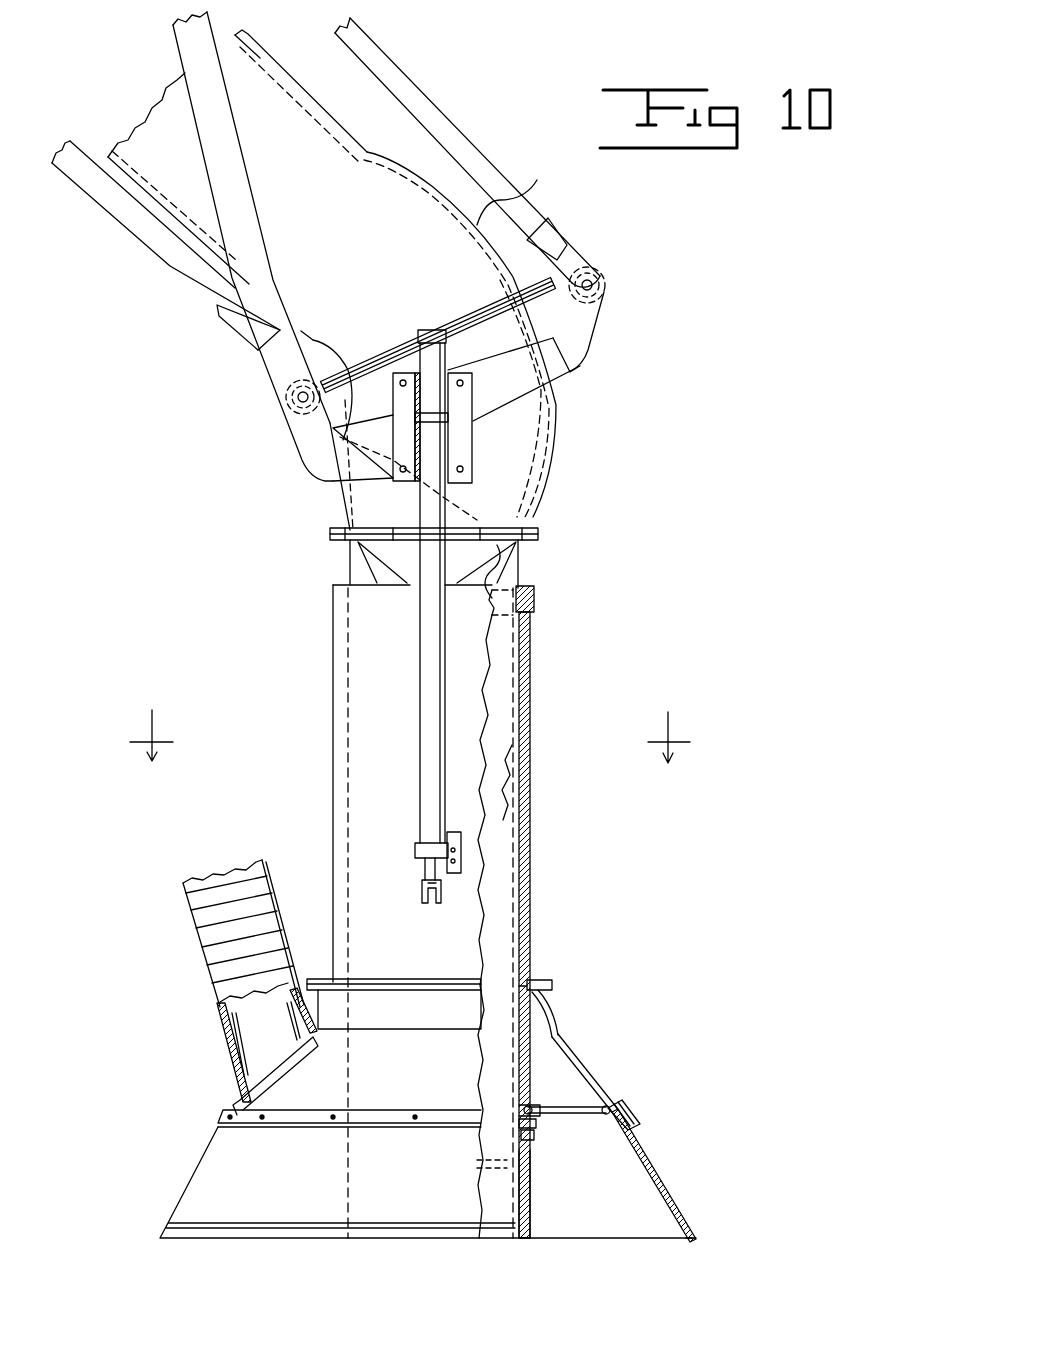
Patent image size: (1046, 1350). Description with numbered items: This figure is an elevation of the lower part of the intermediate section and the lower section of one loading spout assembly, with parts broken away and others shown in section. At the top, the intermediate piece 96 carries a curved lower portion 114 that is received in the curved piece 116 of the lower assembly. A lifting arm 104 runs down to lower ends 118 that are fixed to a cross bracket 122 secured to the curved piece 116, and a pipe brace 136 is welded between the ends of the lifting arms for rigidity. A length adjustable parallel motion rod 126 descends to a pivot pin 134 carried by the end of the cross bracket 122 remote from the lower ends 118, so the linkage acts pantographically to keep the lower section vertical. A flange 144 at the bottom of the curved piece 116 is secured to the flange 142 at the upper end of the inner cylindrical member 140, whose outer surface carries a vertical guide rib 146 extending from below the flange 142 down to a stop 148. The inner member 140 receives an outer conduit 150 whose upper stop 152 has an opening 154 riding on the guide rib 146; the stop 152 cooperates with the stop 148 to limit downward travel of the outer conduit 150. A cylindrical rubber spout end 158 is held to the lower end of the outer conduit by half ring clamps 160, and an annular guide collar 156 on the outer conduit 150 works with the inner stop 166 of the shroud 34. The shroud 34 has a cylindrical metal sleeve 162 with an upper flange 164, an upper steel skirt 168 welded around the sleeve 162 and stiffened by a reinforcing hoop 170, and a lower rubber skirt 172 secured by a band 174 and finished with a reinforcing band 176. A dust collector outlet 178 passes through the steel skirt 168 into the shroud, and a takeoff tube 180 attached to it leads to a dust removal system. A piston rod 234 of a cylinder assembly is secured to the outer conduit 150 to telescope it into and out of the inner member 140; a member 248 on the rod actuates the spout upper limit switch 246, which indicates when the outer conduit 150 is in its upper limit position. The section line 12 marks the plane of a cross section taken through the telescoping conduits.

The intermediate piece 96 is at (270, 45).
The lifting arm 104 is at (255, 220).
The pipe brace 136 is at (167, 265).
The length adjustable parallel motion rod 126 is at (462, 147).
The curved lower portion 114 is at (529, 184).
The pivot pin 134 is at (600, 290).
The cross bracket 122 is at (582, 365).
The curved piece 116 is at (557, 447).
The lower ends of arms 118 is at (260, 367).
The piston rod 234 is at (422, 866).
The switch actuating member 248 is at (443, 878).
The spout upper limit switch 246 is at (550, 812).
The flange 144 is at (480, 528).
The inner cylindrical member 140 is at (522, 572).
The flange 142 is at (475, 585).
The stop 152 is at (546, 627).
The opening 154 is at (532, 603).
The outer conduit 150 is at (530, 863).
The rubber spout end 158 is at (530, 1215).
The section line 12 is at (421, 749).
The flange 164 is at (550, 982).
The annular guide collar 156 is at (533, 978).
The cylindrical metal sleeve 162 is at (545, 1010).
The vertical guide rib 146 is at (513, 1082).
The inner stop 166 is at (518, 1100).
The stop 148 is at (523, 1163).
The upper steel skirt 168 is at (593, 1082).
The rod 170 is at (600, 1098).
The band 174 is at (640, 1117).
The lower rubber skirt 172 is at (663, 1188).
The reinforcing band 176 is at (692, 1236).
The half ring clamps 160 is at (533, 1130).
The shroud 34 is at (711, 1111).
The takeoff tube 180 is at (183, 918).
The dust collector outlet 178 is at (237, 1083).